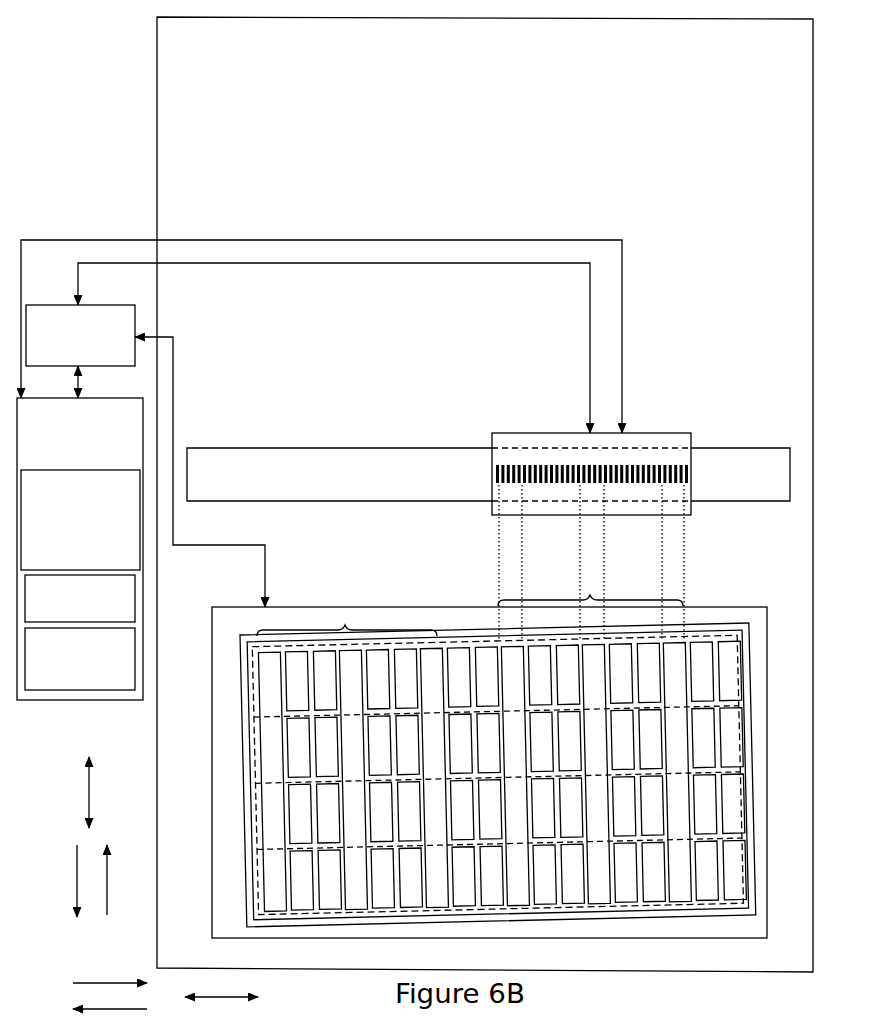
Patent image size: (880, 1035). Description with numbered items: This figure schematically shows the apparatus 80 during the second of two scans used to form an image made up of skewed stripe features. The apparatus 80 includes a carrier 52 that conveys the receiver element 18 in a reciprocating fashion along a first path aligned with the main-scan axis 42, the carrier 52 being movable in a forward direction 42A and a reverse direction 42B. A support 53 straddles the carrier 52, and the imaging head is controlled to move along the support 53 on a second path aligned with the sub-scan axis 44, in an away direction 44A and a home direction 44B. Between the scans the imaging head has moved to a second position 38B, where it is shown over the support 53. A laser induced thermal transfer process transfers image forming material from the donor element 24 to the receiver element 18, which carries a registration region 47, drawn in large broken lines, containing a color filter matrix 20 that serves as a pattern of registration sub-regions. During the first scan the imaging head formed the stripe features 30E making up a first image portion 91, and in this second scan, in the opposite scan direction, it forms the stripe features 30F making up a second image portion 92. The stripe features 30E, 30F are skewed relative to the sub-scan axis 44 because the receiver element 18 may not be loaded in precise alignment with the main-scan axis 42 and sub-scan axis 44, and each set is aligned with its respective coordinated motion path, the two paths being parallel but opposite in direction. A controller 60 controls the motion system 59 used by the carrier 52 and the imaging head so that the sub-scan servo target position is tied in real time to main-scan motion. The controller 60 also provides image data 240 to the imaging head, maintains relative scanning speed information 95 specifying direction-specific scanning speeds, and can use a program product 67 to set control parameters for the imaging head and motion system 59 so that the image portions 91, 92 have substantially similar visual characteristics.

The apparatus 80 is at (752, 973).
The support 53 is at (297, 447).
The second position 38B is at (538, 423).
The motion system 59 is at (90, 359).
The controller 60 is at (90, 453).
The relative scanning speed information 95 is at (90, 564).
The image data 240 is at (96, 615).
The program product 67 is at (90, 686).
The carrier 52 is at (212, 762).
The receiver element 18 is at (498, 775).
The donor element 24 is at (497, 775).
The registration region 47 is at (497, 774).
The color filter matrix 20 is at (515, 775).
The stripe features 30E is at (353, 779).
The stripe features 30F is at (596, 774).
The first image portion 91 is at (347, 623).
The second image portion 92 is at (590, 593).
The main-scan axis 42 is at (87, 763).
The forward direction 42A is at (110, 862).
The reverse direction 42B is at (77, 895).
The sub-scan axis 44 is at (240, 997).
The away direction 44A is at (128, 983).
The home direction 44B is at (97, 1009).